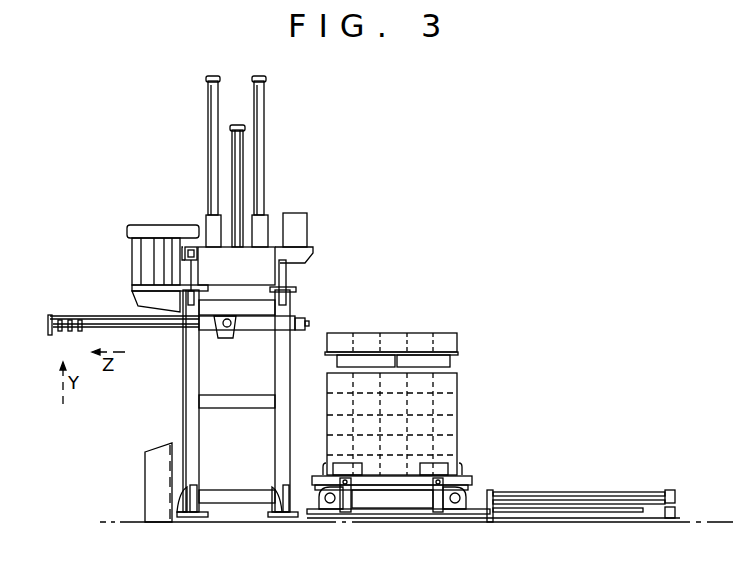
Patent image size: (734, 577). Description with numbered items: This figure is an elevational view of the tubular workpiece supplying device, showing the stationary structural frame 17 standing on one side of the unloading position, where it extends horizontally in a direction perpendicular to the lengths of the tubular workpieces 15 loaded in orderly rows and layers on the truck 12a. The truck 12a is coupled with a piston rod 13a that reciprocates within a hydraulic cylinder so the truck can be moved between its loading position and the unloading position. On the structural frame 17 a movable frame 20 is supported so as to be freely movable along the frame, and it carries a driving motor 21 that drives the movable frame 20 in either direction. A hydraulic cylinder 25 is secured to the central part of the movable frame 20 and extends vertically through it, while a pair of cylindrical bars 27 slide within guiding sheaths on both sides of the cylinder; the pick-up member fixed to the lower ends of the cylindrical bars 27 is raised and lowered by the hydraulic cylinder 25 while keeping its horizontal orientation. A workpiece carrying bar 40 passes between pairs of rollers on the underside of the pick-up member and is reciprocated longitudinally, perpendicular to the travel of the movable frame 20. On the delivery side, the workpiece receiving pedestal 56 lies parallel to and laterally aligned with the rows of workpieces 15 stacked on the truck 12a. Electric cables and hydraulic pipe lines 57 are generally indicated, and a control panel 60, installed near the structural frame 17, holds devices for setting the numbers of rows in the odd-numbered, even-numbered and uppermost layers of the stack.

The cylindrical bars 27 is at (208, 98).
The hydraulic cylinder 25 is at (232, 152).
The driving motor 21 is at (293, 220).
The movable frame 20 is at (268, 270).
The electric cables and hydraulic pipe lines 57 is at (135, 252).
The structural frame 17 is at (185, 386).
The workpiece carrying bar 40 is at (157, 328).
The control panel 60 is at (150, 478).
The tubular workpieces 15 is at (393, 340).
The workpiece receiving pedestal 56 is at (450, 358).
The truck 12a is at (397, 486).
The piston rod 13a is at (585, 492).